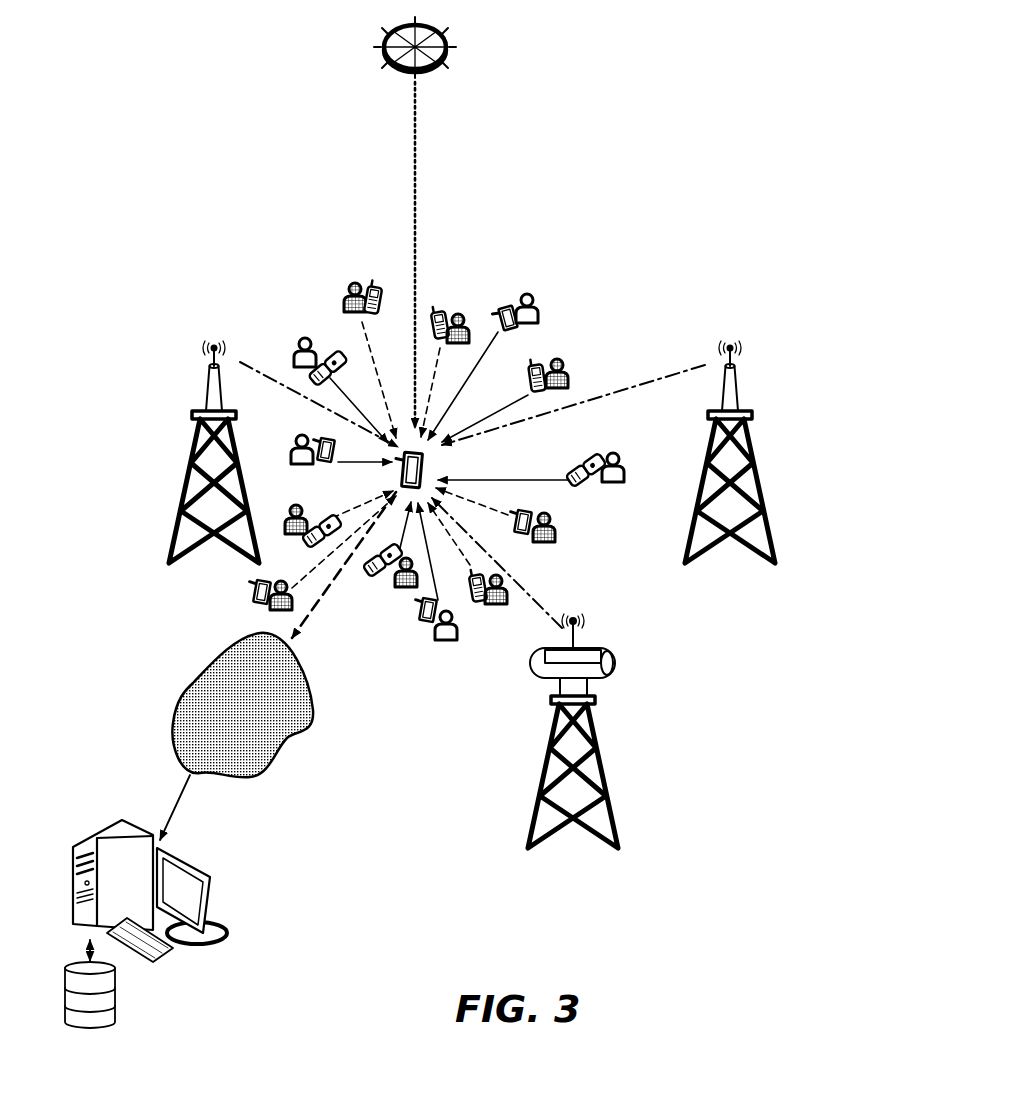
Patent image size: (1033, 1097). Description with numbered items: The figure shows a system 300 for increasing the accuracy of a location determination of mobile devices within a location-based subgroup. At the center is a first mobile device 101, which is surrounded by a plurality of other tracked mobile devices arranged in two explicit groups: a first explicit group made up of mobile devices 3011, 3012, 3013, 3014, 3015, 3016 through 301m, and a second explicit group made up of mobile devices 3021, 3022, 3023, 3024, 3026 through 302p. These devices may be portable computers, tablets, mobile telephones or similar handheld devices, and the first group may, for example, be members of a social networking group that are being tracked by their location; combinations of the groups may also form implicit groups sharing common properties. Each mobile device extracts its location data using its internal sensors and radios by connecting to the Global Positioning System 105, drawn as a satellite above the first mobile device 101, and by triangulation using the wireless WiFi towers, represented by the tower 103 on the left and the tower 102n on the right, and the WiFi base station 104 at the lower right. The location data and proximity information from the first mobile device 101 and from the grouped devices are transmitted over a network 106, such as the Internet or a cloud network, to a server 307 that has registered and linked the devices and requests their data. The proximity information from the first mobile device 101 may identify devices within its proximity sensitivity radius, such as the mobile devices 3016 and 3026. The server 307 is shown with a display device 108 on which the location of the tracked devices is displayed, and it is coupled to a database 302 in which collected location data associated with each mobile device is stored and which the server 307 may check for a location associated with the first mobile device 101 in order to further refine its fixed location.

The system 300 is at (686, 112).
The Global Positioning System (GPS) 105 is at (388, 76).
The first mobile device 101 is at (426, 473).
The base station tower 103 is at (210, 366).
The WiFi tower 102n is at (734, 366).
The WiFi base station 104 is at (607, 680).
The network 106 is at (298, 760).
The server 307 is at (115, 843).
The display device 108 is at (210, 893).
The database 302 is at (118, 1020).
The mobile device 3011 is at (298, 340).
The mobile device 3012 is at (530, 296).
The mobile device 3013 is at (562, 362).
The mobile device 3014 is at (613, 490).
The mobile device 3015 is at (382, 592).
The mobile device 3016 is at (293, 456).
The mobile device 301m is at (448, 645).
The mobile device 3021 is at (355, 285).
The mobile device 3022 is at (447, 308).
The mobile device 3023 is at (546, 548).
The mobile device 3024 is at (498, 612).
The mobile device 3026 is at (250, 598).
The mobile device 302p is at (290, 514).